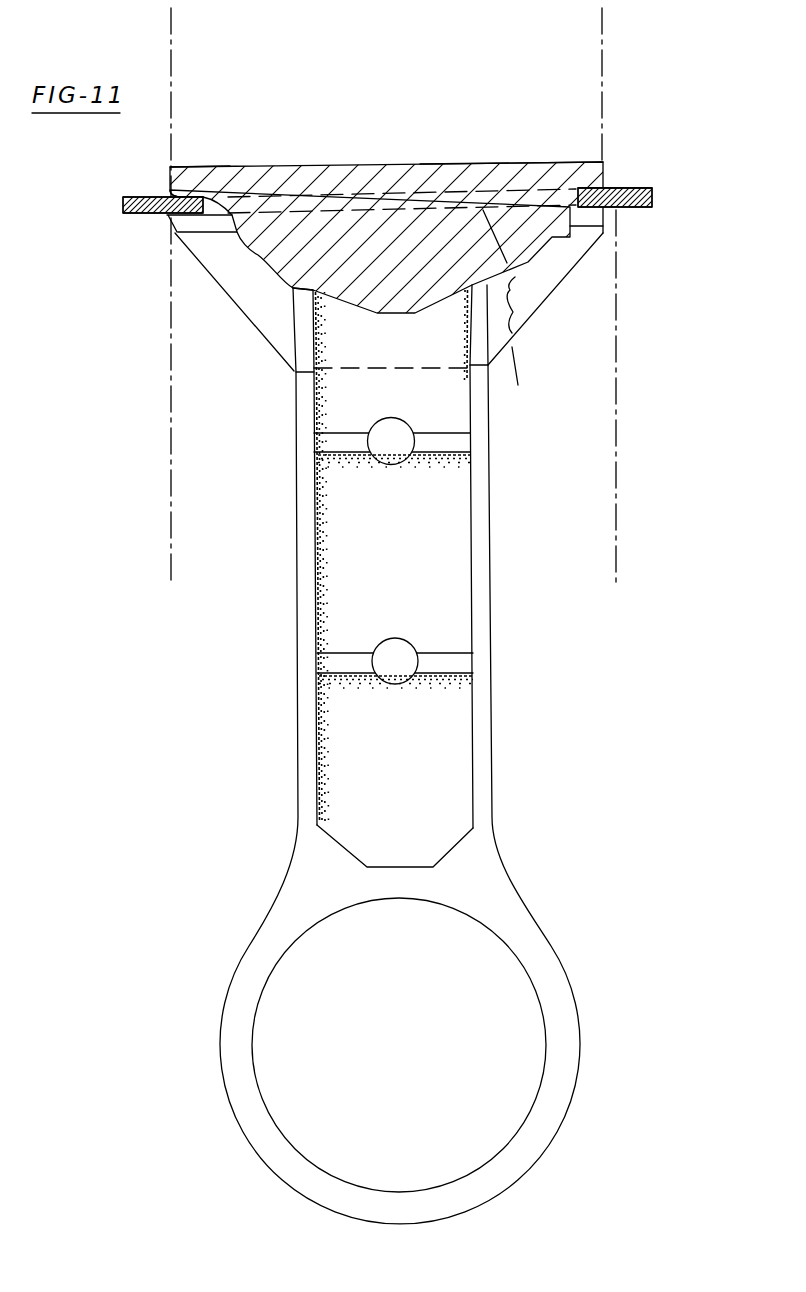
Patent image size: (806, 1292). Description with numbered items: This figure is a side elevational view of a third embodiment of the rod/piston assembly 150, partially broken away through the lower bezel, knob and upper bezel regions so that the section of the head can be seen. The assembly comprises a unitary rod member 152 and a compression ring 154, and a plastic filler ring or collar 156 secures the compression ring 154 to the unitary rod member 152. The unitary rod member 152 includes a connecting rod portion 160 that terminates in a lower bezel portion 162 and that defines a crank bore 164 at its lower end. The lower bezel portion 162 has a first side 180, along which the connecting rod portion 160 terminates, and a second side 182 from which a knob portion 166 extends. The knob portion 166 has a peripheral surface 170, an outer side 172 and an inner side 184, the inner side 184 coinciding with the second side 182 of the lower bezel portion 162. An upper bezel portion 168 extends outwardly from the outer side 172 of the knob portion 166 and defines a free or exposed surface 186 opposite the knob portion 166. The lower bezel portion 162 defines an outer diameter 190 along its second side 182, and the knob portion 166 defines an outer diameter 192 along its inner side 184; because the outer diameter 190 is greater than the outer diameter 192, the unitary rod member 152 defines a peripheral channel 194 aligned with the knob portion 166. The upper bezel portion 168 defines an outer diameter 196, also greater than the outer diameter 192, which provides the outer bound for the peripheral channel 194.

The rod/piston assembly 150 is at (284, 706).
The unitary rod member 152 is at (341, 807).
The compression ring 154 is at (641, 208).
The plastic filler ring or collar 156 is at (597, 212).
The connecting rod portion 160 is at (466, 747).
The lower bezel portion 162 is at (250, 290).
The crank bore 164 is at (276, 1006).
The knob portion 166 is at (383, 197).
The upper bezel portion 168 is at (532, 164).
The peripheral surface 170 is at (247, 185).
The outer side 172 is at (432, 199).
The first side 180 is at (293, 403).
The second side 182 is at (332, 192).
The inner side 184 is at (514, 315).
The free or exposed surface 186 is at (561, 160).
The outer diameter 190 is at (180, 555).
The outer diameter 192 is at (579, 165).
The peripheral channel 194 is at (602, 182).
The outer diameter 196 is at (590, 53).